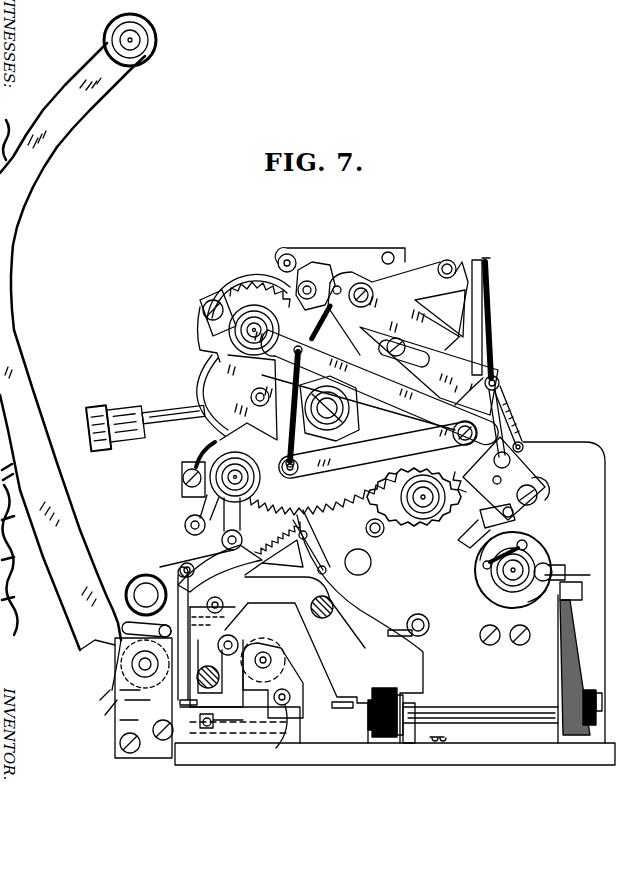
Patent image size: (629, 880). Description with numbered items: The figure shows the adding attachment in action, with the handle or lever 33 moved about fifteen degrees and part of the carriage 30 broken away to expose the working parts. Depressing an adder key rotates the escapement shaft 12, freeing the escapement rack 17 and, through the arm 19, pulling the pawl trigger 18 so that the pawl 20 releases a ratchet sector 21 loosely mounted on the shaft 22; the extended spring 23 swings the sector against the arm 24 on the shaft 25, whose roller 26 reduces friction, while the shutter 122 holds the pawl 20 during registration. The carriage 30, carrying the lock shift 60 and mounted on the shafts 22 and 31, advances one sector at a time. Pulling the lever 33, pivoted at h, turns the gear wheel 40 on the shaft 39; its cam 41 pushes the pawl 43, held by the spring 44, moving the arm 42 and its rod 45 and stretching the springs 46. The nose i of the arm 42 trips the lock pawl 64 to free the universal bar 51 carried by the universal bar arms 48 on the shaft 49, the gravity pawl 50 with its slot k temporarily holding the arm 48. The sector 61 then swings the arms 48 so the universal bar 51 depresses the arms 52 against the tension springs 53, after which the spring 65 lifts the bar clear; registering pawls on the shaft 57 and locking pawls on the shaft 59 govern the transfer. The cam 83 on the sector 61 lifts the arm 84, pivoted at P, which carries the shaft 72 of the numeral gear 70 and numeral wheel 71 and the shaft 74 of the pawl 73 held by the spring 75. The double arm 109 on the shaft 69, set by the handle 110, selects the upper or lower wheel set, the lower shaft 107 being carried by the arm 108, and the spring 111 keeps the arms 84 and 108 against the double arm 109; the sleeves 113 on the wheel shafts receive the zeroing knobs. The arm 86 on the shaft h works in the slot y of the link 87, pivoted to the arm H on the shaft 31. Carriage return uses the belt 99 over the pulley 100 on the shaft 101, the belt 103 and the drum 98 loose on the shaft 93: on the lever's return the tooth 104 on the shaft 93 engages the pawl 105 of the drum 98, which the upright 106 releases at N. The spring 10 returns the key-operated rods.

The operating lever 33 is at (5, 276).
The carriage 30 is at (395, 603).
The escapement rack 17 is at (335, 712).
The belt 99 is at (380, 730).
The pulley 100 is at (369, 722).
The shaft 101 is at (435, 722).
The upright 106 is at (560, 660).
The belt 103 is at (572, 660).
The spring 10 is at (598, 712).
The engagement point N is at (578, 575).
The drum 98 is at (480, 590).
The pawl 105 is at (525, 548).
The shaft 93 is at (552, 568).
The tooth 104 is at (482, 625).
The shaft 59 is at (428, 632).
The lock shift 60 is at (392, 620).
The shaft 57 is at (362, 575).
The shaft 22 is at (333, 607).
The shaft 39 is at (384, 538).
The gear wheel 40 is at (418, 512).
The sector 61 is at (358, 493).
The arm 108 is at (378, 449).
The cam 83 is at (350, 410).
The spring 111 is at (300, 440).
The arm 84 is at (379, 387).
The pivot P is at (429, 372).
The double arm 109 is at (218, 372).
The handle 110 is at (120, 408).
The shaft 72 is at (254, 330).
The numeral wheel 71 is at (200, 300).
The sleeves 113 is at (240, 300).
The numeral gear 70 is at (250, 285).
The shaft 74 is at (300, 277).
The pawl 73 is at (286, 254).
The spring 75 is at (309, 281).
The spring 65 is at (326, 325).
The universal bar arms 48 is at (412, 262).
The shaft 49 is at (365, 283).
The universal bar 51 is at (452, 261).
The arms 52 is at (460, 290).
The lock pawl 64 is at (483, 317).
The tension springs 53 is at (493, 340).
The gravity pawl 50 is at (485, 372).
The slot k is at (499, 384).
The nose i is at (497, 423).
The pawl 43 is at (513, 440).
The spring 44 is at (522, 428).
The arm 42 is at (513, 480).
The rod 45 is at (540, 500).
The cam 41 is at (492, 509).
The springs 46 is at (465, 540).
The shaft 107 is at (212, 468).
The shaft 69 is at (250, 396).
The ratchet sector 21 is at (275, 528).
The extended spring 23 is at (275, 557).
The pawl 20 is at (200, 548).
The shutter 122 is at (175, 580).
The pawl trigger 18 is at (140, 555).
The slot y is at (114, 626).
The link 87 is at (128, 630).
The arm 86 is at (115, 645).
The shaft h is at (95, 707).
The arm H is at (144, 698).
The shaft 31 is at (211, 637).
The shaft 25 is at (216, 668).
The roller 26 is at (268, 652).
The arm 24 is at (290, 697).
The escapement shaft 12 is at (283, 734).
The arm 19 is at (250, 725).